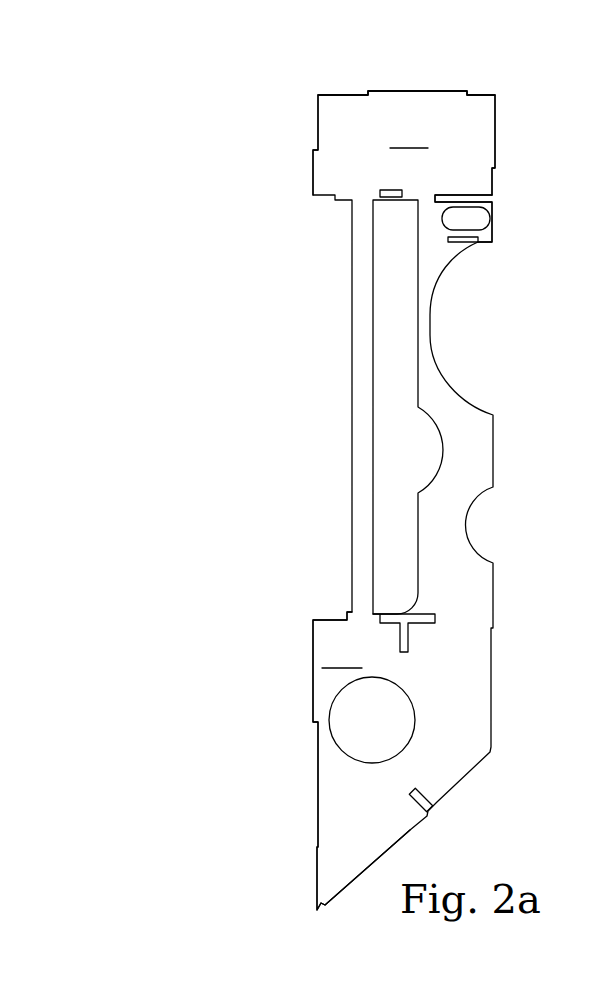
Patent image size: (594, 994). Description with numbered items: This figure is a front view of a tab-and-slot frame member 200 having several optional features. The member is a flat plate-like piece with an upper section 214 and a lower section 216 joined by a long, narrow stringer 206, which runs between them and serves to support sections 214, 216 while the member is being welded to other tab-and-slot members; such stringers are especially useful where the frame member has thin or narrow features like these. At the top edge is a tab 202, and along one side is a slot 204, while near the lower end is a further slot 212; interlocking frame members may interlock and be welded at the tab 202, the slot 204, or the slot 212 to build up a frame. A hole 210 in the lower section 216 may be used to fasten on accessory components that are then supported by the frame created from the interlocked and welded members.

The tab-and-slot frame member 200 is at (257, 72).
The tab 202 is at (427, 91).
The slot 204 is at (494, 196).
The stringer 206 is at (362, 400).
The hole 210 is at (364, 722).
The slot 212 is at (425, 806).
The section 214 is at (404, 143).
The section 216 is at (361, 761).